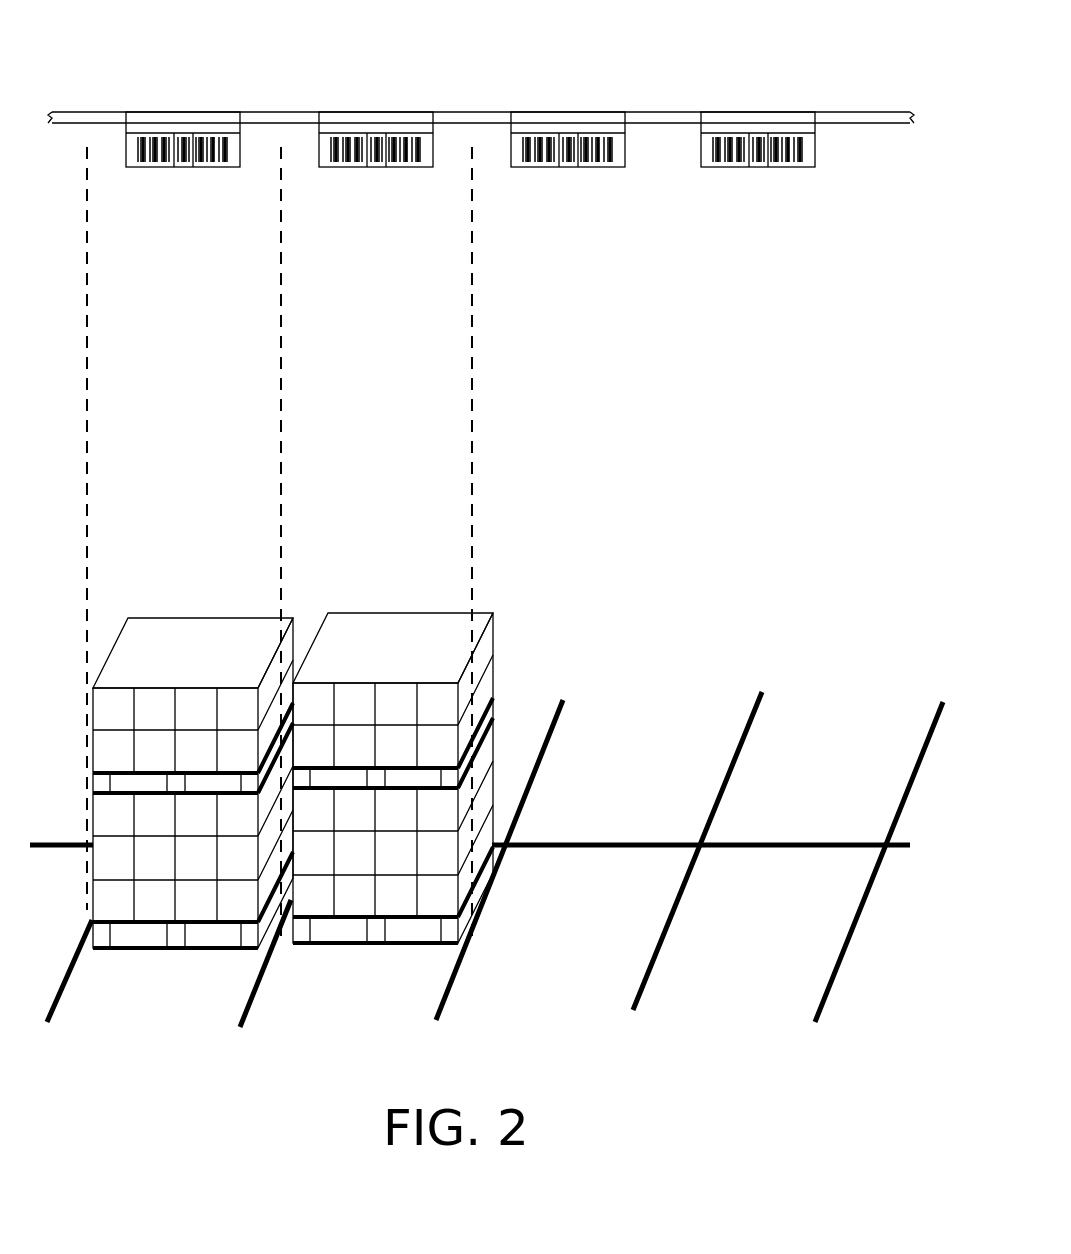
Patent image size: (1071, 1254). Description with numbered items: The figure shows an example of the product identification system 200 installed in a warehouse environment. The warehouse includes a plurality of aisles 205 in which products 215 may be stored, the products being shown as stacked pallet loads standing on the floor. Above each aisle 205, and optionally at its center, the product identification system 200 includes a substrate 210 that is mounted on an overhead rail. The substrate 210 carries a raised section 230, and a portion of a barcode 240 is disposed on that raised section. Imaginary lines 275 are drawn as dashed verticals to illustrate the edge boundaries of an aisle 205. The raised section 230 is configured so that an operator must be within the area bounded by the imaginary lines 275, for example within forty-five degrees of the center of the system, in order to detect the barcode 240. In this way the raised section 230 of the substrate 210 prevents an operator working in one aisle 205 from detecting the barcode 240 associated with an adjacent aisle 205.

The product identification system 200 is at (481, 151).
The substrate 210 is at (754, 198).
The raised section 230 is at (753, 160).
The barcode 240 is at (733, 162).
The imaginary lines 275 is at (470, 370).
The products 215 is at (177, 634).
The aisles 205 is at (300, 997).